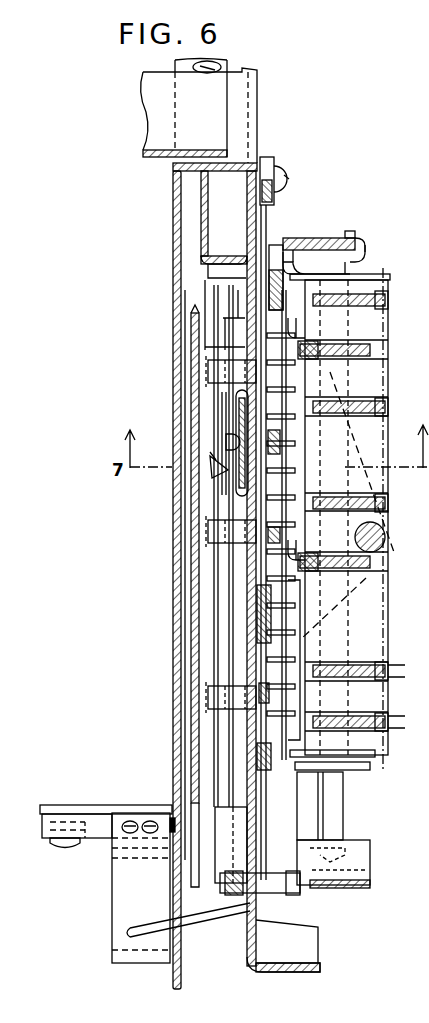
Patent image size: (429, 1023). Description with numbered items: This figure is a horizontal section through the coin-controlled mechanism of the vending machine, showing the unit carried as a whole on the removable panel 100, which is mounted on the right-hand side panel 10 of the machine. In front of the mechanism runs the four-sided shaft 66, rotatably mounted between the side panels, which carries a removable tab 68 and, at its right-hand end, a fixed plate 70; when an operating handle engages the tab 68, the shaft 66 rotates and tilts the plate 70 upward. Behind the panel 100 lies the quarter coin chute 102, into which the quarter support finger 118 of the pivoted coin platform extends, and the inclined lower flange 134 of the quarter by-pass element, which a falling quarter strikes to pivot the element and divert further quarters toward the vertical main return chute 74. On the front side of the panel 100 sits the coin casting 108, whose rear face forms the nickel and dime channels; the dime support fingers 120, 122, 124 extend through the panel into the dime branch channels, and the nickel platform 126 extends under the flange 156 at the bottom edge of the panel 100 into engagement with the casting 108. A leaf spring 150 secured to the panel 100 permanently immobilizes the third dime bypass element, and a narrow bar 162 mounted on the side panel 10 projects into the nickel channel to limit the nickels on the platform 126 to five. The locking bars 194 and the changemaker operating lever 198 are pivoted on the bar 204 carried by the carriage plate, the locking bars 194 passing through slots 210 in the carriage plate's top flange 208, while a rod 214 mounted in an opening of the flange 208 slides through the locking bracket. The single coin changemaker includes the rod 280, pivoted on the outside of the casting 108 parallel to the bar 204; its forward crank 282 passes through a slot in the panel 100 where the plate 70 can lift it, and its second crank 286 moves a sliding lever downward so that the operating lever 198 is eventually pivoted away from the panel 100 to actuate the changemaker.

The side panel 10 is at (177, 604).
The four-sided shaft 66 is at (90, 806).
The removable tab 68 is at (48, 841).
The plate 70 is at (114, 900).
The vertical main return chute 74 is at (205, 224).
The removable panel 100 is at (250, 958).
The quarter coin chute 102 is at (238, 488).
The coin casting 108 is at (276, 250).
The quarter support finger 118 is at (218, 464).
The dime support finger 120 is at (233, 705).
The dime support finger 122 is at (233, 547).
The dime support finger 124 is at (228, 371).
The nickel platform 126 is at (216, 405).
The lower flange 134 is at (228, 441).
The leaf spring 150 is at (330, 240).
The flange 156 is at (236, 322).
The narrow bar 162 is at (266, 160).
The locking bar 194 is at (342, 345).
The changemaker operating lever 198 is at (365, 293).
The bar 204 is at (335, 818).
The flange 208 is at (389, 709).
The slot 210 is at (374, 669).
The rod 214 is at (381, 546).
The rod 280 is at (276, 862).
The crank 282 is at (206, 915).
The second crank 286 is at (284, 262).